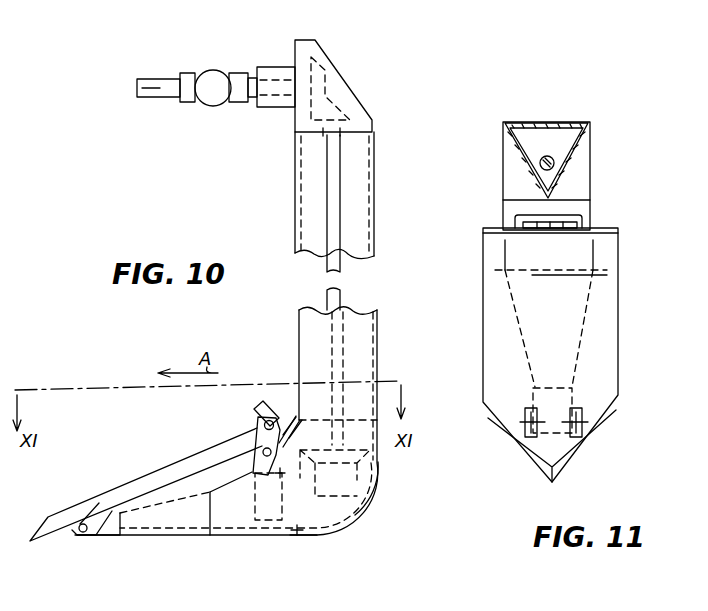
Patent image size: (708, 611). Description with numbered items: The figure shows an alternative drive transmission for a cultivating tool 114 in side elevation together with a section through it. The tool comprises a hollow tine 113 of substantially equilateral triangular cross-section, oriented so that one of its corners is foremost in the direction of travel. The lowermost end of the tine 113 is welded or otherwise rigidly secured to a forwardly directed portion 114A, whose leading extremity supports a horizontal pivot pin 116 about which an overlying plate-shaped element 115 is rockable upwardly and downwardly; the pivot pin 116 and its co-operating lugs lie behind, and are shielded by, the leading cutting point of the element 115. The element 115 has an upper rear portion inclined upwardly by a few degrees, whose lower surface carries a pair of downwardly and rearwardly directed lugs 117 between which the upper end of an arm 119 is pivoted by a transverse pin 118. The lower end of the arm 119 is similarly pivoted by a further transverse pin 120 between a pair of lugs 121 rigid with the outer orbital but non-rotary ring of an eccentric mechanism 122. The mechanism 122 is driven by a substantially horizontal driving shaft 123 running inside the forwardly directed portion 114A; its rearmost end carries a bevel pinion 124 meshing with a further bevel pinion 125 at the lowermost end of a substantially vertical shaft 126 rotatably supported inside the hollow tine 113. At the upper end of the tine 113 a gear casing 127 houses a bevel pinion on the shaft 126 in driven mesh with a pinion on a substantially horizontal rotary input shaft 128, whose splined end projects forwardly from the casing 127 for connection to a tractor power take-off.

In FIG. 10, the tine 113 is at (300, 309).
In FIG. 10, the cultivating tool 114 is at (284, 191).
In FIG. 11, the cultivating tool 114 is at (593, 118).
In FIG. 10, the forwardly directed portion 114A is at (173, 523).
In FIG. 10, the plate-shaped element 115 is at (130, 492).
In FIG. 10, the pivot pin 116 is at (84, 523).
In FIG. 10, the lugs 117 is at (283, 412).
In FIG. 10, the transverse pin 118 is at (258, 415).
In FIG. 10, the arm 119 is at (255, 428).
In FIG. 10, the transverse pin 120 is at (262, 450).
In FIG. 10, the lugs 121 is at (252, 468).
In FIG. 10, the eccentric mechanism 122 is at (270, 536).
In FIG. 10, the driving shaft 123 is at (276, 531).
In FIG. 10, the bevel pinion 124 is at (366, 500).
In FIG. 10, the bevel pinion 125 is at (374, 461).
In FIG. 10, the vertical shaft 126 is at (342, 292).
In FIG. 10, the gear casing 127 is at (348, 97).
In FIG. 10, the rotary input shaft 128 is at (250, 75).